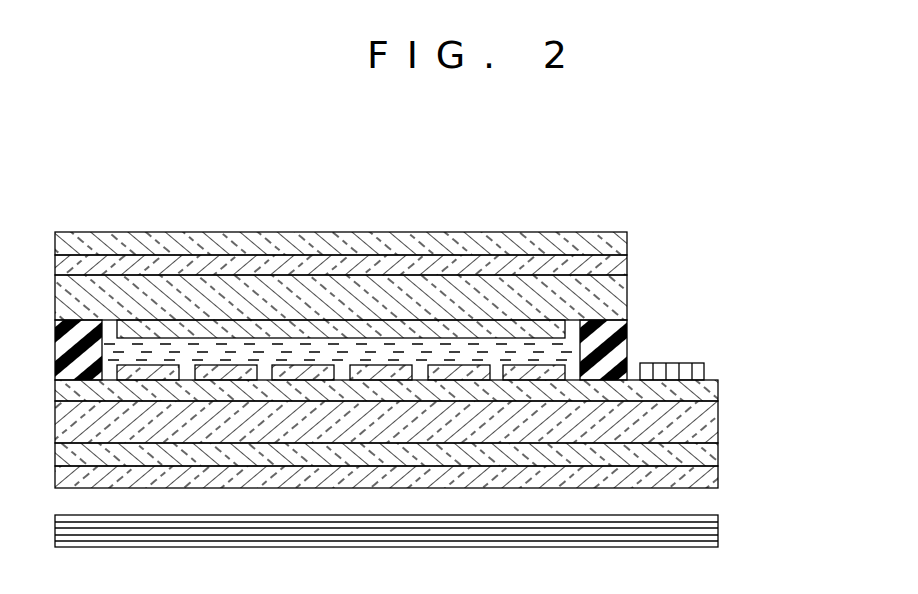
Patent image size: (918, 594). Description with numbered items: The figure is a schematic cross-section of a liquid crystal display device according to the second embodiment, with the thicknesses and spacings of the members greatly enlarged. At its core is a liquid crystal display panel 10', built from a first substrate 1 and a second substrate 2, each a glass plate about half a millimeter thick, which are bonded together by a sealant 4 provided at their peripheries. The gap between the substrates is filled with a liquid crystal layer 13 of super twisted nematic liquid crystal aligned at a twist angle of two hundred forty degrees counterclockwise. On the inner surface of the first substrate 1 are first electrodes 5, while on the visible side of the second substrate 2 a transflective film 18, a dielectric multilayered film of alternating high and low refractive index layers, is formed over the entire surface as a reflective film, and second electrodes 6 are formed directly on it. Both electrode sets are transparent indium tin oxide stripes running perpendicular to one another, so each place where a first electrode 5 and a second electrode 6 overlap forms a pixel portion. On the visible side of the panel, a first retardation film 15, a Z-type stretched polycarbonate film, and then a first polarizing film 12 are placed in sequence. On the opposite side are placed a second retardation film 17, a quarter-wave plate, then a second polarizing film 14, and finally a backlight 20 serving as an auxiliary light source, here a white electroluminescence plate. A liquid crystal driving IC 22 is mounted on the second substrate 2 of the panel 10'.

The first substrate 1 is at (627, 300).
The second substrate 2 is at (703, 427).
The sealant 4 is at (627, 333).
The first electrodes 5 is at (473, 330).
The second electrodes 6 is at (520, 377).
The first polarizing film 12 is at (628, 238).
The liquid crystal layer 13 is at (412, 353).
The second polarizing film 14 is at (703, 476).
The first retardation film 15 is at (628, 268).
The second retardation film 17 is at (703, 456).
The transflective film 18 is at (705, 393).
The backlight 20 is at (703, 534).
The liquid crystal driving IC 22 is at (700, 365).
The liquid crystal display panel 10' is at (476, 360).